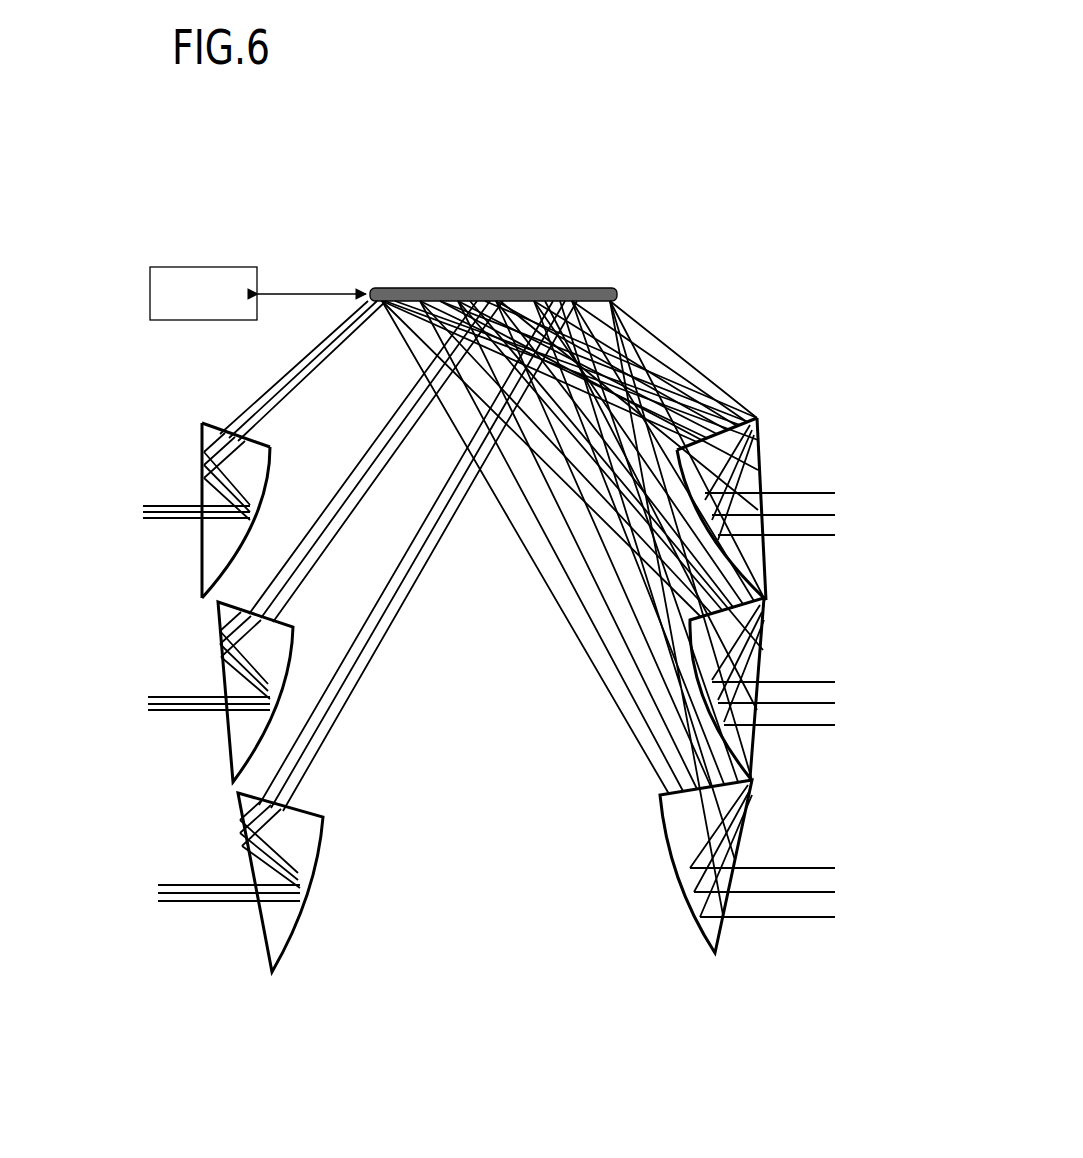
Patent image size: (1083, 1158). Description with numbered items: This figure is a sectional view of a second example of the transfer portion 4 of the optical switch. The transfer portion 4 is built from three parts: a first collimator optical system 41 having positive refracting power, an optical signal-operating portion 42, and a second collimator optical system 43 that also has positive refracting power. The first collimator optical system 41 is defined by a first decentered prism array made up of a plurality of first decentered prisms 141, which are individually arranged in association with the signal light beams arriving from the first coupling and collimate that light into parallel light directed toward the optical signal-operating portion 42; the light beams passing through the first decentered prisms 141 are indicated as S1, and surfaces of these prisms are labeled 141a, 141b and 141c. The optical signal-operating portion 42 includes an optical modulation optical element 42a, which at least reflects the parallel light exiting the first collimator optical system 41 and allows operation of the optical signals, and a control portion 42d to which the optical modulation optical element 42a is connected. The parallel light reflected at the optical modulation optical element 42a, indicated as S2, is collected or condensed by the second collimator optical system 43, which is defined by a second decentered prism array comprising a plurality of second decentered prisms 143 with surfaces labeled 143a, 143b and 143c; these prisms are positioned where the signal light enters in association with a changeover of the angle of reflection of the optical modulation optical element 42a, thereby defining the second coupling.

The transfer portion 4 is at (731, 150).
The first collimator optical system 41 is at (103, 310).
The optical signal-operating portion 42 is at (414, 242).
The optical modulation optical element 42a is at (607, 291).
The control portion 42d is at (245, 270).
The second collimator optical system 43 is at (820, 258).
The first decentered prism 141 is at (207, 648).
The incident surface of first optical element 141a is at (205, 488).
The reflecting surface of first optical element 141b is at (265, 490).
The exit surface of first optical element 141c is at (202, 423).
The second decentered prism 143 is at (690, 624).
The incident surface of second optical element 143a is at (748, 416).
The exit surface of second optical element 143b is at (772, 462).
The reflecting surface of second optical element 143c is at (683, 463).
The first light beam S1 is at (262, 430).
The second light beam S2 is at (728, 400).